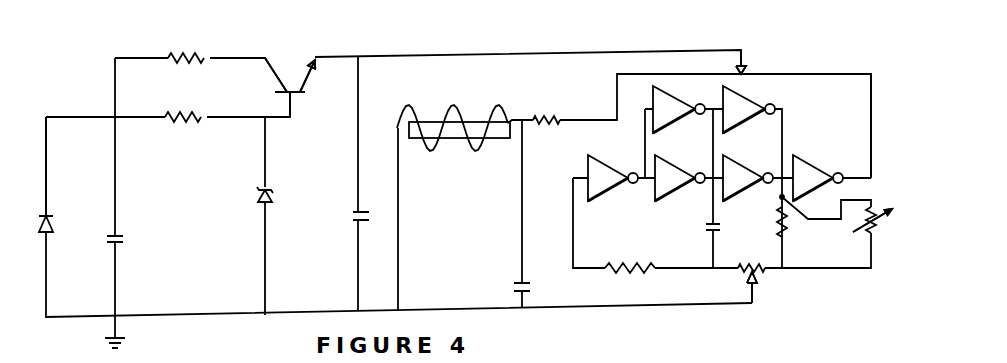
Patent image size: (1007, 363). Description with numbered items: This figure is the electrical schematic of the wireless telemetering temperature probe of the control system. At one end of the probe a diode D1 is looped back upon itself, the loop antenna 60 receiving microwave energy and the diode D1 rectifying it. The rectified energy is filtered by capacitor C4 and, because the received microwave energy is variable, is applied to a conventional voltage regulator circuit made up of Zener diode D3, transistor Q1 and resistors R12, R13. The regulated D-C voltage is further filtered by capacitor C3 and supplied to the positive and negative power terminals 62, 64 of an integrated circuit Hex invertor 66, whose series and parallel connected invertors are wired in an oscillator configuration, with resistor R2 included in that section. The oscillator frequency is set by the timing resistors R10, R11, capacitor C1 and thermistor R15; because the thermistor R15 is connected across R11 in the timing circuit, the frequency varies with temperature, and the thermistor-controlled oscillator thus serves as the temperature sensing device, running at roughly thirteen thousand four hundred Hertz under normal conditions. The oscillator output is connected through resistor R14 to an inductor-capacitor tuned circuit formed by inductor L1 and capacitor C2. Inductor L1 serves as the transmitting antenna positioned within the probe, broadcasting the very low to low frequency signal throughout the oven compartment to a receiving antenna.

The loop antenna 60 is at (46, 117).
The positive power terminal 62 is at (770, 41).
The negative power terminal 64 is at (773, 305).
The integrated circuit Hex invertor 66 is at (876, 66).
The transistor Q1 is at (290, 71).
The resistor R12 is at (188, 75).
The resistor R13 is at (186, 132).
The diode D1 is at (54, 222).
The capacitor C4 is at (124, 224).
The Zener diode D3 is at (270, 205).
The capacitor C3 is at (366, 219).
The inductor antenna L1 is at (465, 133).
The capacitor C2 is at (514, 286).
The resistor R14 is at (535, 120).
The resistor R2 is at (629, 262).
The capacitor C1 is at (707, 227).
The timing resistor R10 is at (744, 266).
The timing resistor R11 is at (787, 224).
The thermistor R15 is at (880, 226).